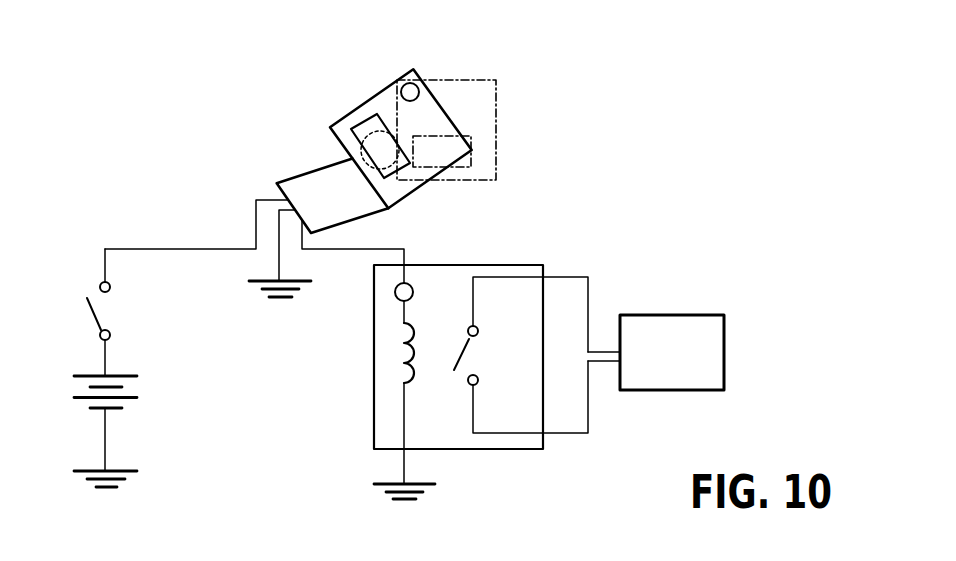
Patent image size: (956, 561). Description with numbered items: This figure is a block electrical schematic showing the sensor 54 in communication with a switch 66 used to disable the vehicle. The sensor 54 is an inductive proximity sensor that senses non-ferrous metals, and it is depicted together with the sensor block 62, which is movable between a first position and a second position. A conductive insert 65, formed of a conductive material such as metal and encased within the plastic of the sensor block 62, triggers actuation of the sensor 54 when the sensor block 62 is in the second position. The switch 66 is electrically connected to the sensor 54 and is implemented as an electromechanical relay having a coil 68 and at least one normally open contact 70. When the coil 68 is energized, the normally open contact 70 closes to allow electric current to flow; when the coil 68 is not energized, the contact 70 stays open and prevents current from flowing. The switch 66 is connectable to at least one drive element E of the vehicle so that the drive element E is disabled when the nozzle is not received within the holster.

The sensor 54 is at (310, 155).
The sensor block 62 is at (497, 100).
The conductive insert 65 is at (365, 118).
The switch 66 is at (504, 265).
The coil 68 is at (415, 373).
The normally open contact 70 is at (472, 347).
The drive element E is at (677, 315).